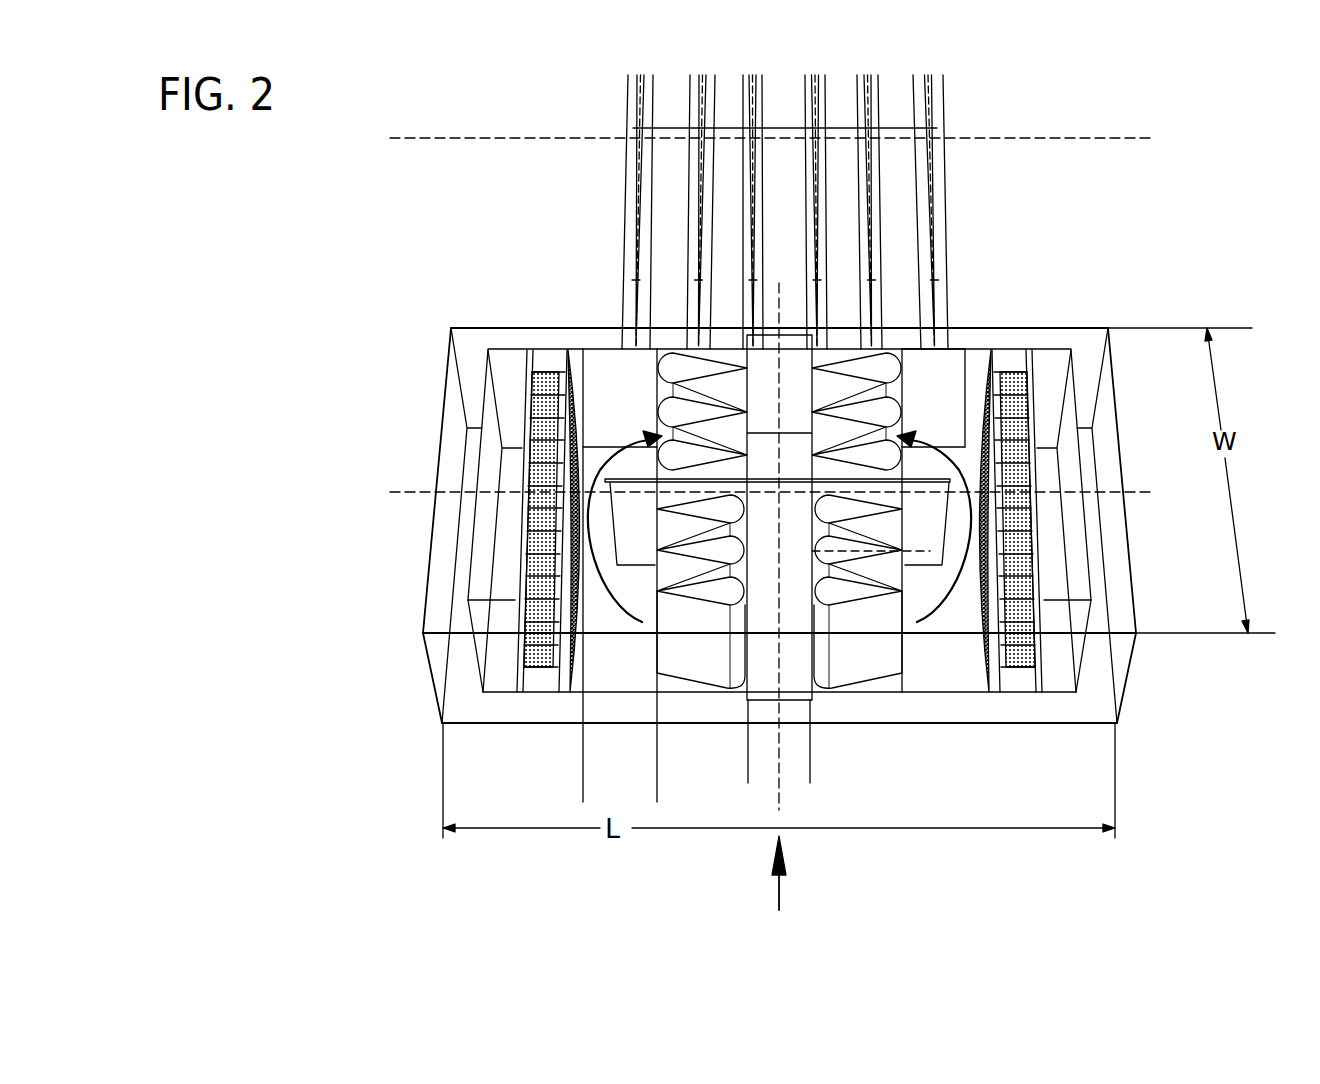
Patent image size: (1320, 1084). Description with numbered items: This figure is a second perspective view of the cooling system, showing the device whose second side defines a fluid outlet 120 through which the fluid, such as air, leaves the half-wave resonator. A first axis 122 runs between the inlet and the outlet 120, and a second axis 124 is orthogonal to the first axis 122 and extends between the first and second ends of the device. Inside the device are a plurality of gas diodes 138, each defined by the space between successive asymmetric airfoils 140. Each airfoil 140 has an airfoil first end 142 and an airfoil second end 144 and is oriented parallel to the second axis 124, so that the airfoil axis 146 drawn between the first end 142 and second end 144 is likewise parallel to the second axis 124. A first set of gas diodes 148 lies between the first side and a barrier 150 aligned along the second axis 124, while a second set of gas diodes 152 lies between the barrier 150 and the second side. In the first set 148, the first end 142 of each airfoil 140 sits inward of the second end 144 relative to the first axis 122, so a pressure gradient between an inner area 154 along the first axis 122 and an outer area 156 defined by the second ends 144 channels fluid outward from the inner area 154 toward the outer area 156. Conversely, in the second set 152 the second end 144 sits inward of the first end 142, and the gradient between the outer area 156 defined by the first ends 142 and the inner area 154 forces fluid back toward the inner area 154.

The fluid outlet 120 is at (763, 352).
The first axis 122 is at (779, 810).
The second axis 124 is at (428, 492).
The gas diode 138 is at (738, 530).
The asymmetric airfoil 140 is at (656, 367).
The airfoil first end 142 is at (893, 367).
The airfoil second end 144 is at (903, 655).
The airfoil axis 146 is at (905, 557).
The first set of gas diodes 148 is at (645, 507).
The barrier 150 is at (930, 518).
The second set of gas diodes 152 is at (976, 414).
The inner area 154 is at (810, 760).
The outer area 156 is at (657, 790).